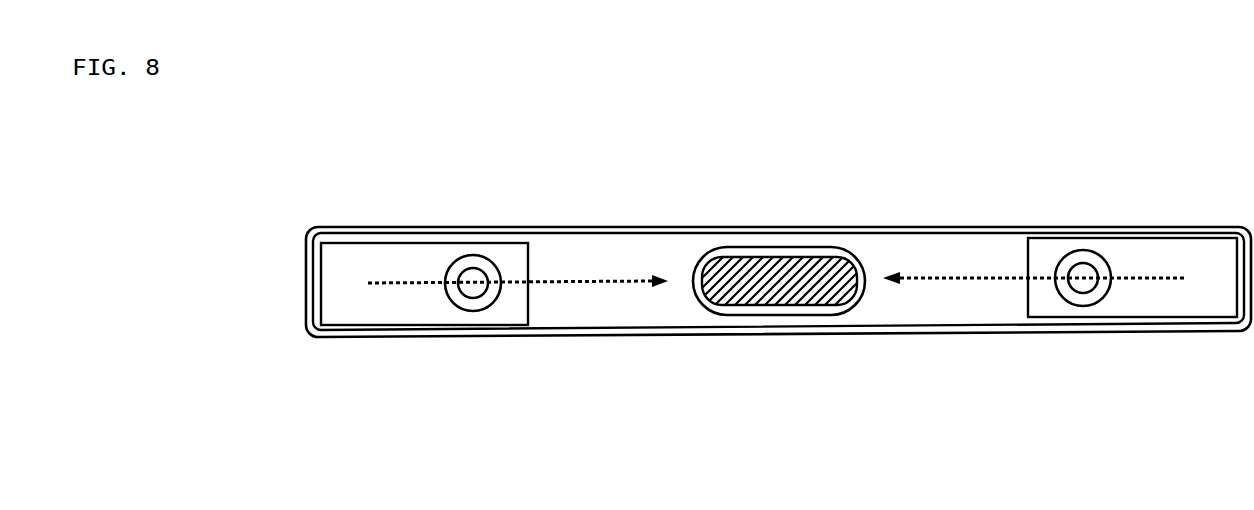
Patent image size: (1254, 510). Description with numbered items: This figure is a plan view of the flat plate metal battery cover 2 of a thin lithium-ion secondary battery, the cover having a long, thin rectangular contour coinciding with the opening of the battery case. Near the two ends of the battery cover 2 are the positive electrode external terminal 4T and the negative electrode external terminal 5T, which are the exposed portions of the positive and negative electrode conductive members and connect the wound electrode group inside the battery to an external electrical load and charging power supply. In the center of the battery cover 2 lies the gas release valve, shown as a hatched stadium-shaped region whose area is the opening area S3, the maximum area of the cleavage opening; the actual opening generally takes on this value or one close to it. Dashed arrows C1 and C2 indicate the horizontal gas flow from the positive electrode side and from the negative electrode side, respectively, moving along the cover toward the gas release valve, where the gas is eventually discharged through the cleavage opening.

The battery cover 2 is at (940, 302).
The positive electrode external terminal 4T is at (462, 265).
The negative electrode external terminal 5T is at (1093, 273).
The horizontal gas flow arrow on the positive electrode side C1 is at (583, 278).
The horizontal gas flow arrow on the negative electrode side C2 is at (943, 274).
The opening area of the gas release valve S3 is at (795, 278).